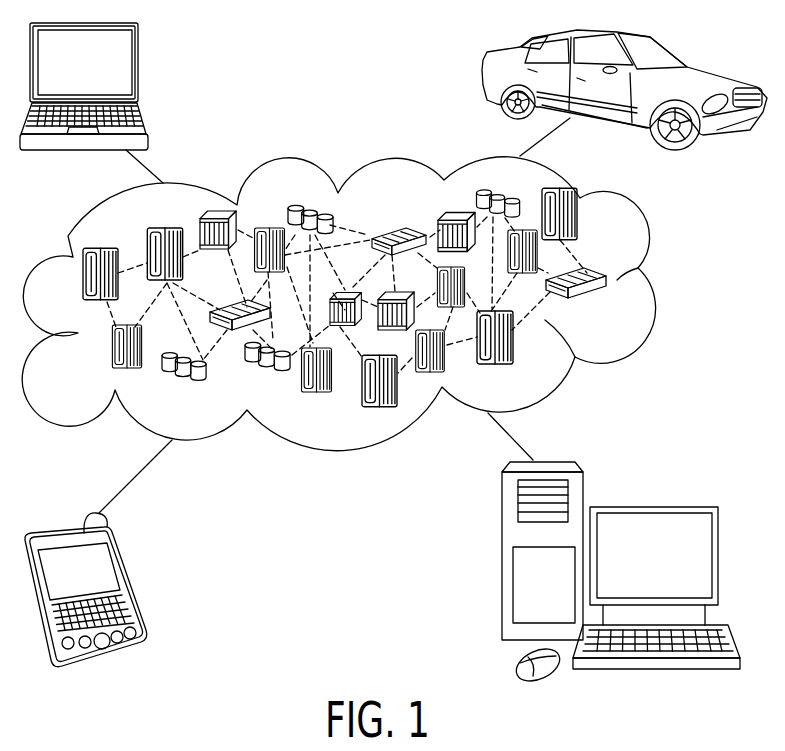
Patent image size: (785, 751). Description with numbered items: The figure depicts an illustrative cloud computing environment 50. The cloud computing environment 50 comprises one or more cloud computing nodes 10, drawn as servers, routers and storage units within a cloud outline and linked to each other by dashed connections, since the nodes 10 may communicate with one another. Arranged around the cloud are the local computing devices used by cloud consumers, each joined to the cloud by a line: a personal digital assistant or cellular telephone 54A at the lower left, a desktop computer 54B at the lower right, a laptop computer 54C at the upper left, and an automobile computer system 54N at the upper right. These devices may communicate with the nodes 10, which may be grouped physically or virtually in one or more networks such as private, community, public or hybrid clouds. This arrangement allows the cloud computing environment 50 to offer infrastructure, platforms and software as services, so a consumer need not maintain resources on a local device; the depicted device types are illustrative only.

The cloud computing nodes 10 is at (393, 355).
The cloud computing environment 50 is at (653, 282).
The personal digital assistant (PDA) or cellular telephone 54A is at (128, 578).
The desktop computer 54B is at (653, 505).
The laptop computer 54C is at (138, 70).
The automobile computer system 54N is at (481, 82).